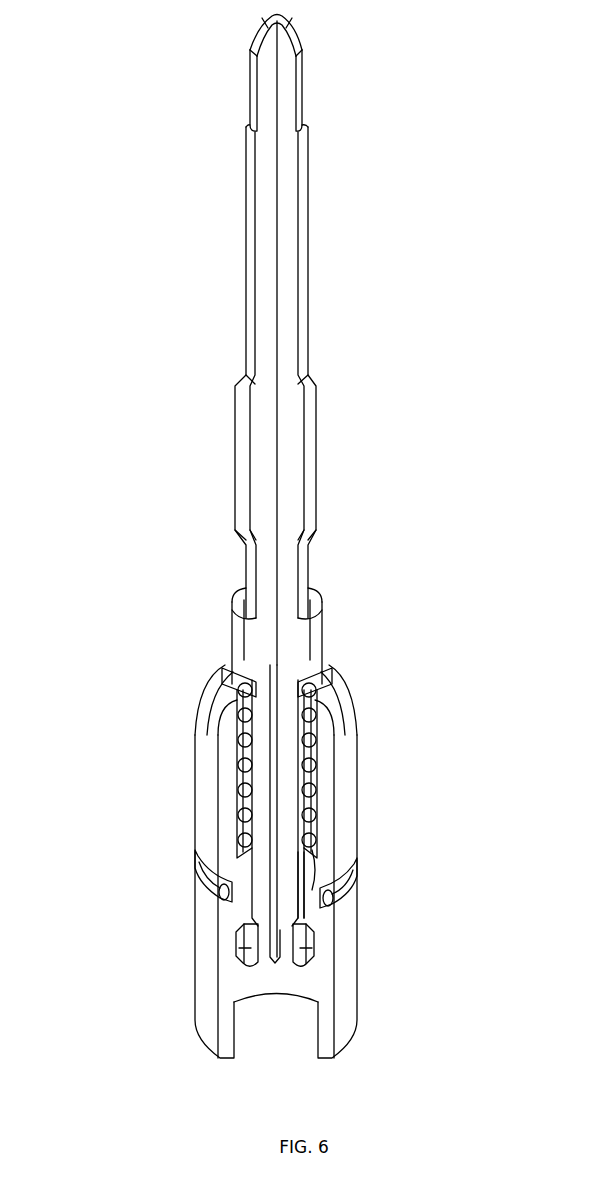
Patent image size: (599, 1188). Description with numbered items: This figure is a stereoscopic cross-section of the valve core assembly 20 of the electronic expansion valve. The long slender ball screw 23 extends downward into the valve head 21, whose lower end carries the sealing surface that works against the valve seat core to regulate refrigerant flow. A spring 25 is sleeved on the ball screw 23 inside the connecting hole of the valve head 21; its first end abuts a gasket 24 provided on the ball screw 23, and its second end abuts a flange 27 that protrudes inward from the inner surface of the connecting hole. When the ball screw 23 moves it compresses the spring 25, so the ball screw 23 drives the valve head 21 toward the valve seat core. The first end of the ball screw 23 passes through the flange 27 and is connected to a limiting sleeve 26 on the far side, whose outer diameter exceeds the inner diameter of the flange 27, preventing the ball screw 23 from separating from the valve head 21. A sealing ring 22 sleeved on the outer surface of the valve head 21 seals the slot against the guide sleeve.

The valve core assembly 20 is at (350, 268).
The valve head 21 is at (207, 843).
The sealing ring 22 is at (200, 888).
The ball screw 23 is at (267, 296).
The gasket 24 is at (232, 668).
The spring 25 is at (245, 782).
The limiting sleeve 26 is at (250, 950).
The flange 27 is at (310, 870).